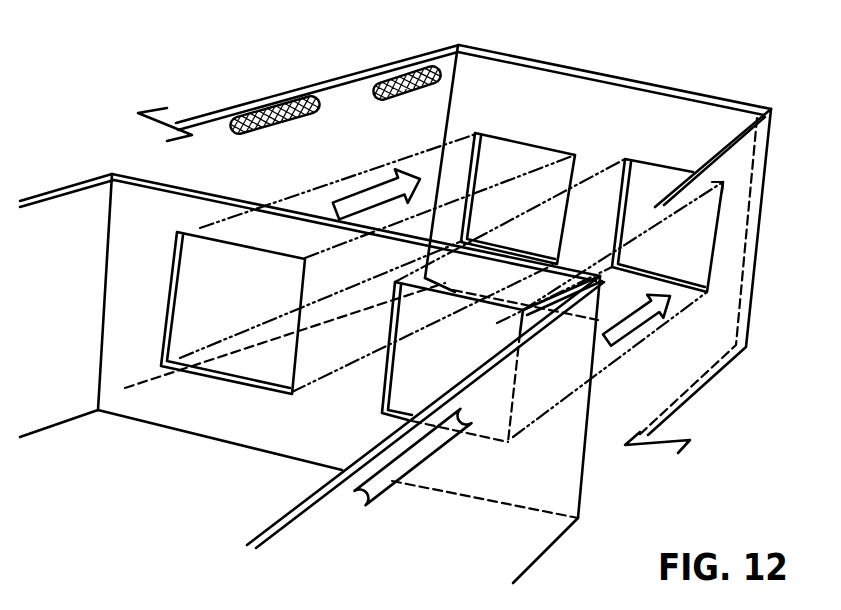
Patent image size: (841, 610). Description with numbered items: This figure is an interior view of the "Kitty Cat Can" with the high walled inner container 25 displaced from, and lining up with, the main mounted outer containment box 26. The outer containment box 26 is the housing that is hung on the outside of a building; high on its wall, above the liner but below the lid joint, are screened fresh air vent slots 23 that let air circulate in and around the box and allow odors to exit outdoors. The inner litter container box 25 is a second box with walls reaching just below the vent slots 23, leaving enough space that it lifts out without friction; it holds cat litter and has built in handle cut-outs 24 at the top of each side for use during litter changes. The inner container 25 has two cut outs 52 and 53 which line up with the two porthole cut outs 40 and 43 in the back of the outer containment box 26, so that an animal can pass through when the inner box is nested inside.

The screened fresh air vent slots 23 is at (397, 78).
The handle cut-outs 24 is at (447, 435).
The high-walled inner container 25 is at (80, 183).
The main mounted outer containment box 26 is at (490, 51).
The main outer box cut out 40 is at (660, 165).
The main outer box cut out 43 is at (530, 144).
The inner container cut out 52 is at (457, 293).
The inner container cut out 53 is at (202, 237).